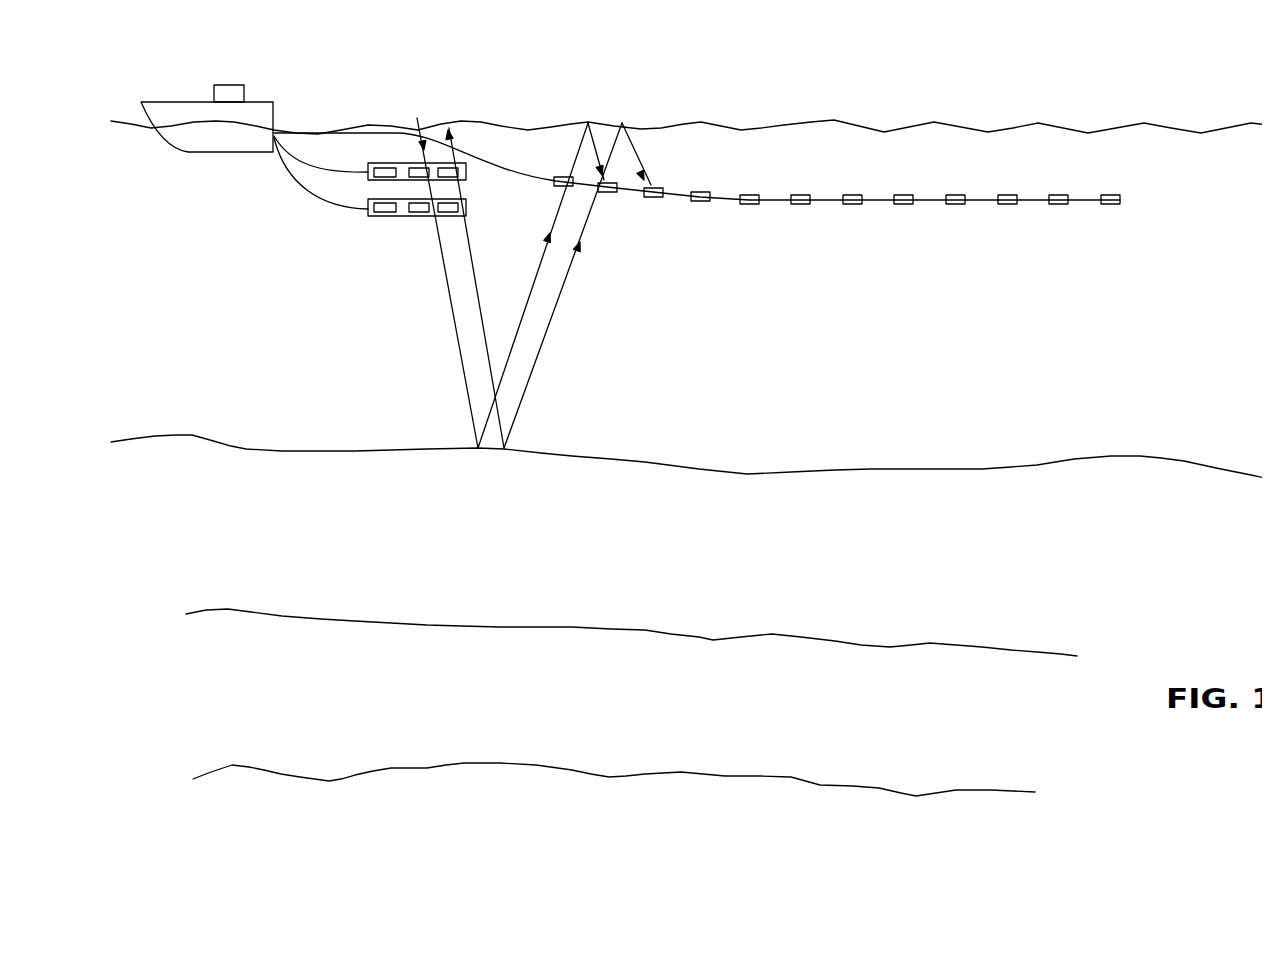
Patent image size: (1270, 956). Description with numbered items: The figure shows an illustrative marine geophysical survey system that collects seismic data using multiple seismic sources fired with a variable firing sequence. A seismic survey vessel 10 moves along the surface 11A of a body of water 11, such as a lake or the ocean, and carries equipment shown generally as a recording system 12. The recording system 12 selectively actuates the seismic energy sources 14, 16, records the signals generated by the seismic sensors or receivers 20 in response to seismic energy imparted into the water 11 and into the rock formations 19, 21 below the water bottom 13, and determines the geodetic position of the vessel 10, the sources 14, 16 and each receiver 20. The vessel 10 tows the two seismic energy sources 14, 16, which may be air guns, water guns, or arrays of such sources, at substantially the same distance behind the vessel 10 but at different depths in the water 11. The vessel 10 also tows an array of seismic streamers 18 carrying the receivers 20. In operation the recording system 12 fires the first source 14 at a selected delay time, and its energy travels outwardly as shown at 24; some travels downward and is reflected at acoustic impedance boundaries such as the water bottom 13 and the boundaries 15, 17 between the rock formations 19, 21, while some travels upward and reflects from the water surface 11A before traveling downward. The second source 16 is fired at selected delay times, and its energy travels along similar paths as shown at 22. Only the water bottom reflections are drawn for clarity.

The seismic survey vessel 10 is at (262, 102).
The body of water 11 is at (205, 246).
The water surface 11A is at (1182, 123).
The recording system 12 is at (232, 84).
The water bottom 13 is at (746, 475).
The seismic energy source 14 is at (368, 218).
The boundary between rock formations 15 is at (714, 642).
The seismic energy source 16 is at (367, 166).
The boundary between rock formations 17 is at (821, 786).
The seismic streamers 18 is at (523, 175).
The rock formation 19 is at (851, 575).
The seismic sensors or receivers 20 is at (567, 176).
The rock formation 21 is at (832, 727).
The energy from the second source 22 is at (414, 136).
The energy from the first source 24 is at (456, 130).